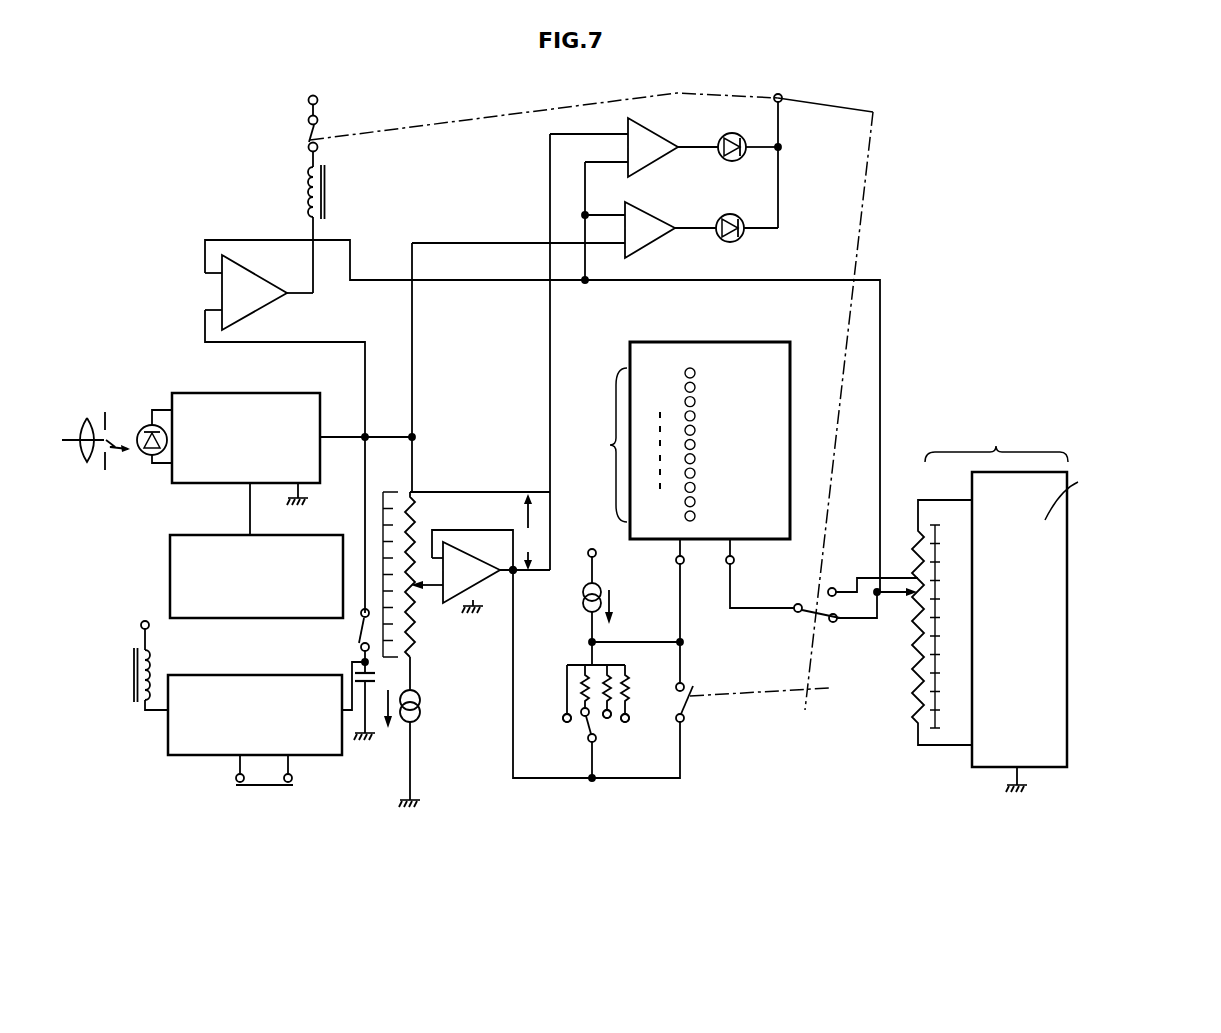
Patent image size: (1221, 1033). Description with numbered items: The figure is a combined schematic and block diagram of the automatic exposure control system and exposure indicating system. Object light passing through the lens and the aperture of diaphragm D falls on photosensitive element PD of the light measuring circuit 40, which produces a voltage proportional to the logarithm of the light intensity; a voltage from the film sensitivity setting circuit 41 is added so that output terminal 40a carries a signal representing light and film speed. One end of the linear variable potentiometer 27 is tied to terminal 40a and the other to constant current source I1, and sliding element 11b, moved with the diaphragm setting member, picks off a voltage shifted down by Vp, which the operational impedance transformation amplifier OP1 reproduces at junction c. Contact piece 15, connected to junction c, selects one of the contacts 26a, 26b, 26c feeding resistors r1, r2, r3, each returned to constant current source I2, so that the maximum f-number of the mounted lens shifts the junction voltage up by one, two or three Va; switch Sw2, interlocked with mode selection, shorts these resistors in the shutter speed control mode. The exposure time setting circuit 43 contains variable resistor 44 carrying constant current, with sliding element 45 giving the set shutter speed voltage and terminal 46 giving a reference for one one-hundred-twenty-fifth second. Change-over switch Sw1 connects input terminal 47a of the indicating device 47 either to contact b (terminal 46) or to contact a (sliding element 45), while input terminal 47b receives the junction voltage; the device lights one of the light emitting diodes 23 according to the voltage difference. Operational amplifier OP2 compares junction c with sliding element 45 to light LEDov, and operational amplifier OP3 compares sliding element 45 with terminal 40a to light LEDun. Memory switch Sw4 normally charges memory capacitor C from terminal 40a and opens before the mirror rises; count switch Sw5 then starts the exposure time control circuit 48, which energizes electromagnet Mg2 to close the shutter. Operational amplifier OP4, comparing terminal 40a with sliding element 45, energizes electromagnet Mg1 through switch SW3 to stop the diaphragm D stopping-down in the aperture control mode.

The switch SW3 is at (308, 136).
The electromagnet Mg1 is at (326, 176).
The operational amplifier OP4 is at (222, 296).
The operational amplifier OP2 is at (652, 144).
The operational amplifier OP3 is at (653, 240).
The light emitting diode LEDov is at (722, 152).
The light emitting diode LEDun is at (720, 222).
The light measuring circuit 40 is at (212, 403).
The output terminal 40a is at (366, 436).
The film sensitivity setting circuit 41 is at (238, 542).
The diaphragm D is at (105, 470).
The photosensitive element PD is at (147, 456).
The exposure time control circuit 48 is at (218, 680).
The electromagnet Mg2 is at (132, 652).
The count switch Sw5 is at (263, 792).
The memory switch Sw4 is at (356, 630).
The memory capacitor C is at (366, 701).
The variable potentiometer 27 is at (418, 508).
The constant current source I1 is at (420, 698).
The operational impedance transformation amplifier OP1 is at (462, 548).
The sliding element 11b is at (436, 598).
The voltage Vp is at (529, 532).
The junction c is at (516, 573).
The indicating device 47 is at (780, 368).
The light emitting diodes 23 is at (600, 445).
The input terminal 47a is at (760, 573).
The input terminal 47b is at (678, 566).
The constant current source I2 is at (631, 603).
The resistor r1 is at (582, 682).
The resistor r2 is at (606, 672).
The resistor r3 is at (628, 682).
The contact 26a is at (583, 720).
The contact 26b is at (607, 720).
The contact 26c is at (645, 711).
The contact piece 15 is at (588, 736).
The switch Sw2 is at (690, 704).
The change-over switch Sw1 is at (806, 618).
The contact a is at (853, 622).
The contact b is at (836, 588).
The sliding element 45 is at (908, 596).
The terminal 46 is at (916, 576).
The variable resistor 44 is at (918, 708).
The exposure time setting circuit 43 is at (1060, 609).